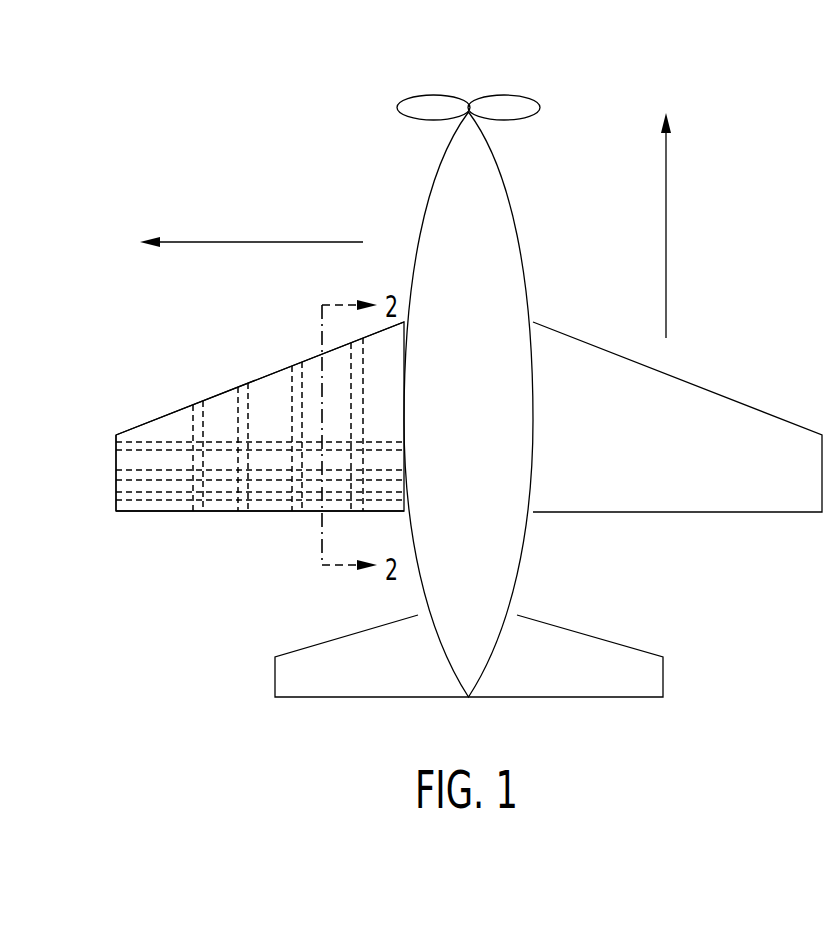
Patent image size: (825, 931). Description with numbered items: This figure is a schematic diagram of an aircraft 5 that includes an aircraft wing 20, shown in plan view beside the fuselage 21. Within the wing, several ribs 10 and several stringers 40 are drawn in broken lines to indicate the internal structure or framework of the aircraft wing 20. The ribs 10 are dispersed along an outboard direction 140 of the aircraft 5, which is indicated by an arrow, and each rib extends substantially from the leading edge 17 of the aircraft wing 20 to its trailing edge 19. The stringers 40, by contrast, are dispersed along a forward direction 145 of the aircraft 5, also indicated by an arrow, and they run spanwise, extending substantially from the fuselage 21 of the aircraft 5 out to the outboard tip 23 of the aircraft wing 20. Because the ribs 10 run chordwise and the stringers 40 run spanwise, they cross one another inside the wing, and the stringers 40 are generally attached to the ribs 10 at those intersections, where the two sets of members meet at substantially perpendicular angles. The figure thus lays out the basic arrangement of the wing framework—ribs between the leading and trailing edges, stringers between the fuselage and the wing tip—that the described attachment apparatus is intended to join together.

The aircraft 5 is at (178, 138).
The ribs 10 is at (302, 363).
The leading edge 17 is at (228, 391).
The trailing edge 19 is at (183, 512).
The aircraft wing 20 is at (178, 410).
The fuselage 21 is at (480, 415).
The outboard tip 23 is at (116, 458).
The stringers 40 is at (150, 437).
The outboard direction 140 is at (338, 242).
The forward direction 145 is at (667, 317).